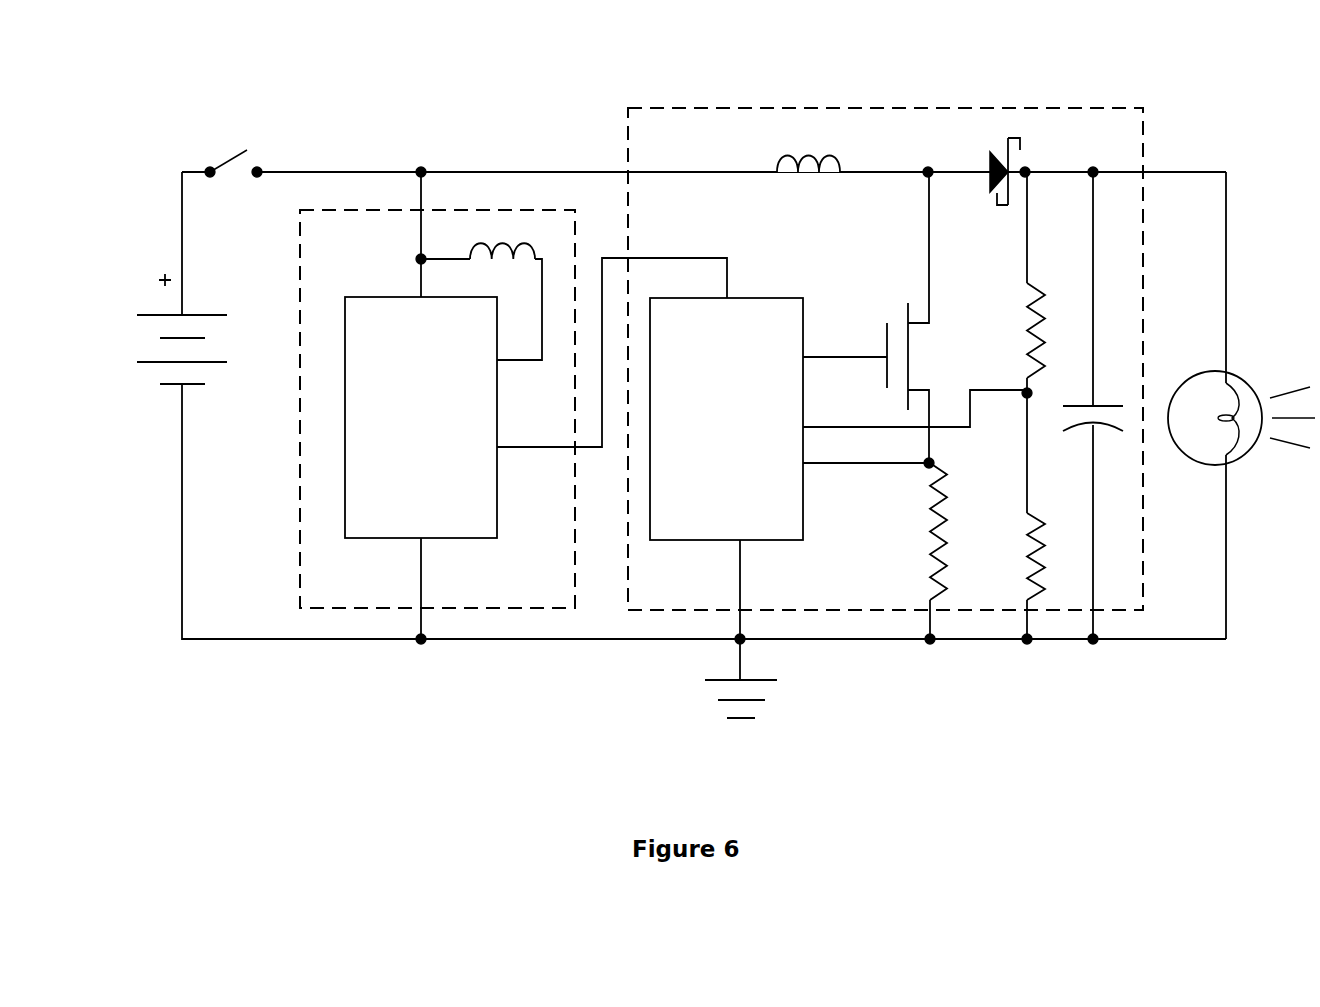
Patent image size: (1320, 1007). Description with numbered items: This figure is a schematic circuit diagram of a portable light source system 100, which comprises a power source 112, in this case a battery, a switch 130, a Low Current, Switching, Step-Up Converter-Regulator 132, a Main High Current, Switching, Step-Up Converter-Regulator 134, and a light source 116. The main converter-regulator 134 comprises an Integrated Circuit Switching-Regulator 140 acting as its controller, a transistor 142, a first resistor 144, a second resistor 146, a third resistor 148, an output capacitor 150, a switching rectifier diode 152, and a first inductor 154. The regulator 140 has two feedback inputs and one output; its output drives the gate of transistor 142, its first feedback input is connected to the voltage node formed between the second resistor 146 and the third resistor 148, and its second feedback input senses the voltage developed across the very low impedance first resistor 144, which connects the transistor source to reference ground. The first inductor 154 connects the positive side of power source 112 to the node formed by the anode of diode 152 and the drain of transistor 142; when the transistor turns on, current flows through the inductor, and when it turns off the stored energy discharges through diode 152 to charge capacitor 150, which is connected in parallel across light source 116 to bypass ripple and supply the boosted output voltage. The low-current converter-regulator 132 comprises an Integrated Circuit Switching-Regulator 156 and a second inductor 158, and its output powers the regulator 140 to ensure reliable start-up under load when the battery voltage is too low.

The portable light source system 100 is at (497, 82).
The power source 112 is at (148, 369).
The light source 116 is at (1245, 452).
The switch 130 is at (216, 170).
The Low Current, Switching, Step-Up Converter-Regulator 132 is at (300, 413).
The Main High Current, Switching, Step-Up Converter-Regulator 134 is at (862, 107).
The Integrated Circuit Switching-Regulator 140 is at (803, 512).
The transistor 142 is at (915, 356).
The resistor R1 144 is at (945, 510).
The resistor R2 146 is at (1043, 330).
The resistor R3 148 is at (1042, 530).
The capacitor C1 150 is at (1103, 400).
The diode D1 152 is at (1022, 150).
The inductor I1 154 is at (828, 178).
The Integrated Circuit Switching-Regulator 156 is at (497, 520).
The inductor I2 158 is at (498, 268).